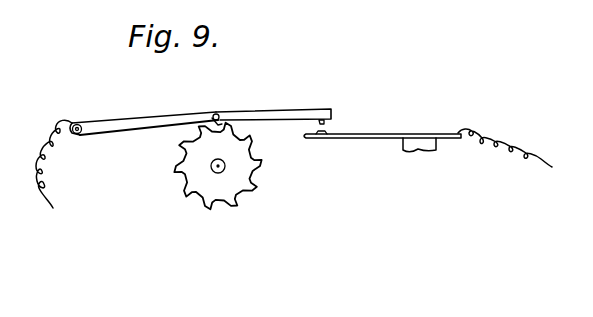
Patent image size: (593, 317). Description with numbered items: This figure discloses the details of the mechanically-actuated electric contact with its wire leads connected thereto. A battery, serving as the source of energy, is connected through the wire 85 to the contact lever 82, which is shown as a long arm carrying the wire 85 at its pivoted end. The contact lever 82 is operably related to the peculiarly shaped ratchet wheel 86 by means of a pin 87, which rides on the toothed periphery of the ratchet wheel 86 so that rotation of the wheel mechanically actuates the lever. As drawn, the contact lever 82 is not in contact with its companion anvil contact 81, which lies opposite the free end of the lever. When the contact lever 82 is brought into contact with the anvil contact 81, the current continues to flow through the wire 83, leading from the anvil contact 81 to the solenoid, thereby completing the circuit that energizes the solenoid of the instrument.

The anvil contact 81 is at (377, 138).
The contact lever 82 is at (289, 112).
The wire 83 is at (507, 143).
The wire 85 is at (42, 145).
The ratchet wheel 86 is at (222, 183).
The pin 87 is at (215, 114).